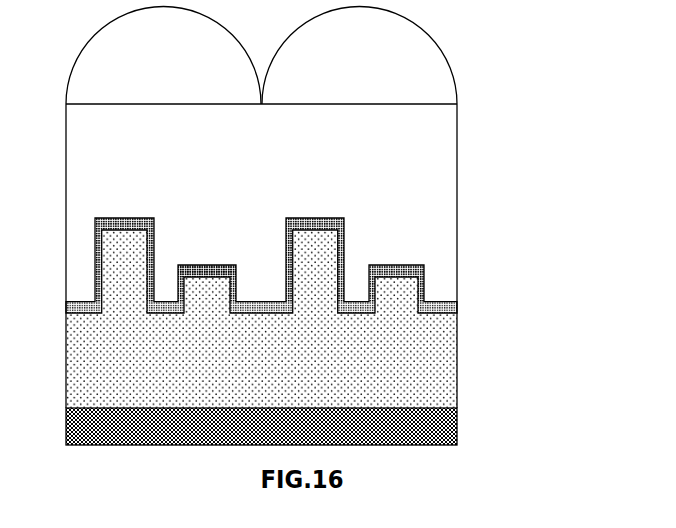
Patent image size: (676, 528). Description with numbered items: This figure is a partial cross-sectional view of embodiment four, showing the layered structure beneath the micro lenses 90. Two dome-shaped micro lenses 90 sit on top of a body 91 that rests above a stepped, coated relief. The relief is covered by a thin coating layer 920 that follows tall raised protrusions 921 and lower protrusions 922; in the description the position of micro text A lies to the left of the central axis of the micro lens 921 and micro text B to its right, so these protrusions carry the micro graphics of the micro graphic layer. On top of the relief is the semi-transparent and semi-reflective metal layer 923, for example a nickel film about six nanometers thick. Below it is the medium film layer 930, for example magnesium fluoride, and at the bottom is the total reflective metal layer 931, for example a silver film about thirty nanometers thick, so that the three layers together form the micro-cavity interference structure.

The micro lens 90 is at (443, 55).
The encapsulant 91 is at (457, 164).
The coating layer 920 is at (457, 303).
The central axis of micro lens 921 is at (345, 219).
The second protrusion 922 is at (425, 266).
The semi-transparent and semi-reflective metal layer 923 is at (209, 265).
The medium film layer 930 is at (457, 356).
The total reflective metal layer 931 is at (457, 428).